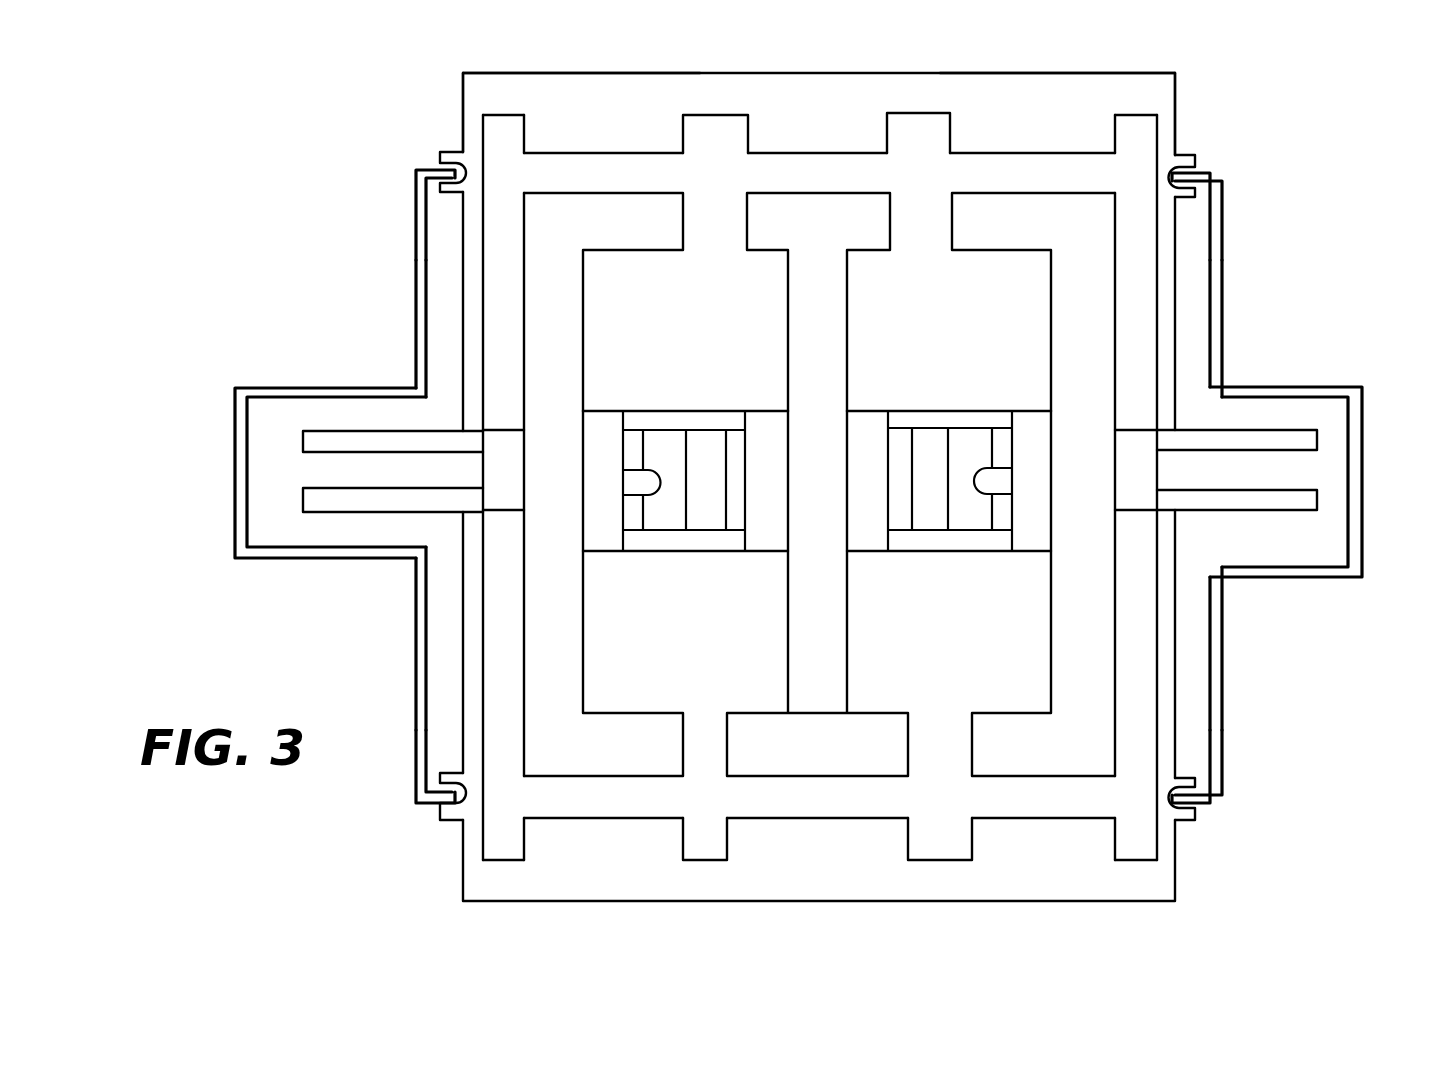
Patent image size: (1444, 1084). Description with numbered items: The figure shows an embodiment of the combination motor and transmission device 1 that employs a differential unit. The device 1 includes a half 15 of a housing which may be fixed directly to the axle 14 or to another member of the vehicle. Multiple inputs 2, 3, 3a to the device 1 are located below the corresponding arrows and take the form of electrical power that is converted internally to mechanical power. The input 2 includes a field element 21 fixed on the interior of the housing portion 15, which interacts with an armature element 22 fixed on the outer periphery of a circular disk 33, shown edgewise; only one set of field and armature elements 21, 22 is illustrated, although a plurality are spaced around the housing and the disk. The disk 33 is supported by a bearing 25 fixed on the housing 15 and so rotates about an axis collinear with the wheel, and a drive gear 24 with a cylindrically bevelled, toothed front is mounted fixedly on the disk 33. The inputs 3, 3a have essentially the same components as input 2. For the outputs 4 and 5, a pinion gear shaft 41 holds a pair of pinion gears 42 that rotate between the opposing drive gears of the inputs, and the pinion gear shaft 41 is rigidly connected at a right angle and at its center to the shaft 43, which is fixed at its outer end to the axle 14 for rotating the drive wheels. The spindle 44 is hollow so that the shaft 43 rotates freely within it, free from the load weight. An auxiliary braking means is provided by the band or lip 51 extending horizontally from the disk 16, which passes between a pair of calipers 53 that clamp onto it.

The combination motor and transmission device 1 is at (398, 172).
The input 2 is at (815, 72).
The input 3 is at (1105, 72).
The input 3a is at (580, 72).
The output 4 is at (213, 498).
The output 5 is at (1374, 480).
The axle 14 is at (230, 440).
The half of housing 15 is at (1178, 92).
The disk 16 is at (443, 722).
The field element 21 is at (745, 136).
The armature element 22 is at (743, 238).
The drive gear 24 is at (613, 412).
The bearing 25 is at (515, 470).
The circular disk 33 is at (590, 692).
The pinion gear shaft 41 is at (925, 440).
The pinion gear 42 is at (710, 545).
The shaft 43 is at (338, 426).
The spindle 44 is at (443, 500).
The band or lip 51 is at (415, 258).
The calipers 53 is at (447, 152).